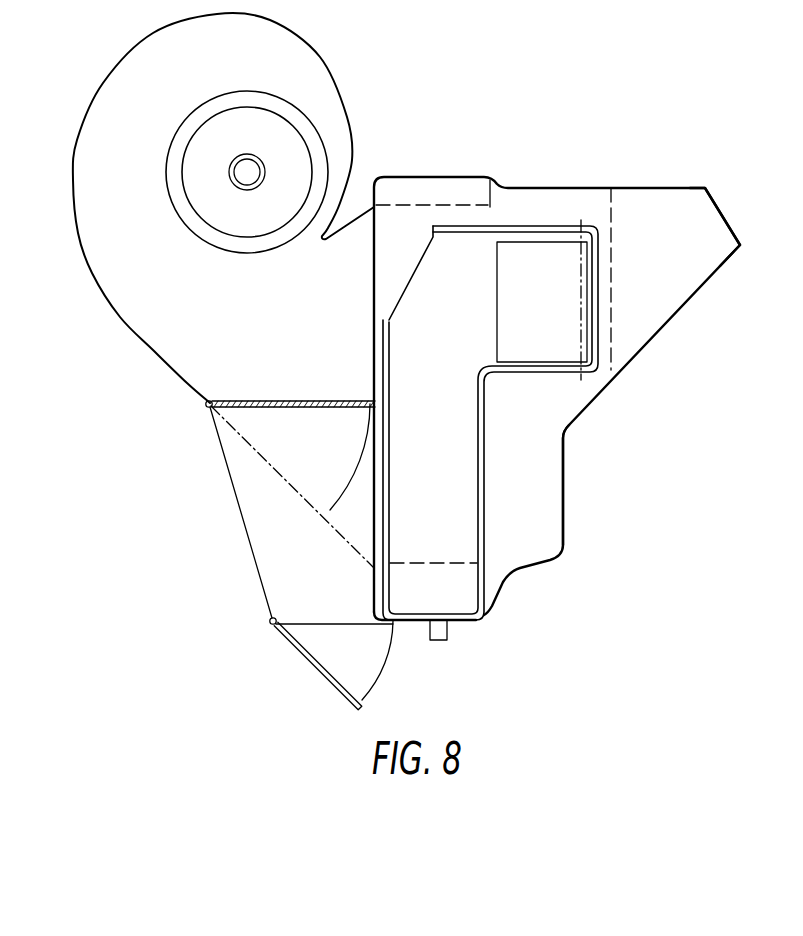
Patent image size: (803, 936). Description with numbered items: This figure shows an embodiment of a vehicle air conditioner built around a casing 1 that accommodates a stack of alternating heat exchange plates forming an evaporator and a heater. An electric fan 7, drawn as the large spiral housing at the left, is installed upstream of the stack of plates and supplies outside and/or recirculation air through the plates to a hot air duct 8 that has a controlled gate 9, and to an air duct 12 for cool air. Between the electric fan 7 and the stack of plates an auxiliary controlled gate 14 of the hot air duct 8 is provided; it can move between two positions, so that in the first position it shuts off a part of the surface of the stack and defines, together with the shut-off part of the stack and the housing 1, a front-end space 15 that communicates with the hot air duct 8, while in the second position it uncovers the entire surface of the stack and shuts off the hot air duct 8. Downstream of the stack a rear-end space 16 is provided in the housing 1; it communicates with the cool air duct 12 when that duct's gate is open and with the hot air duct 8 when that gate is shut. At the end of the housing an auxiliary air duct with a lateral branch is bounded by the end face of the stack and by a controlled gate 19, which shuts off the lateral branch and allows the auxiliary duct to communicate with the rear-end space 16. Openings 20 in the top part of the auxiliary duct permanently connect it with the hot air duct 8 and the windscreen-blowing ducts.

The casing 1 is at (453, 176).
The electric fan 7 is at (72, 186).
The hot air duct 8 is at (308, 613).
The controlled gate 9 is at (322, 672).
The air duct for cool air 12 is at (695, 206).
The auxiliary controlled gate 14 is at (283, 407).
The front-end space 15 is at (355, 510).
The rear-end space 16 is at (567, 467).
The controlled gate 19 is at (557, 252).
The openings 20 is at (418, 245).